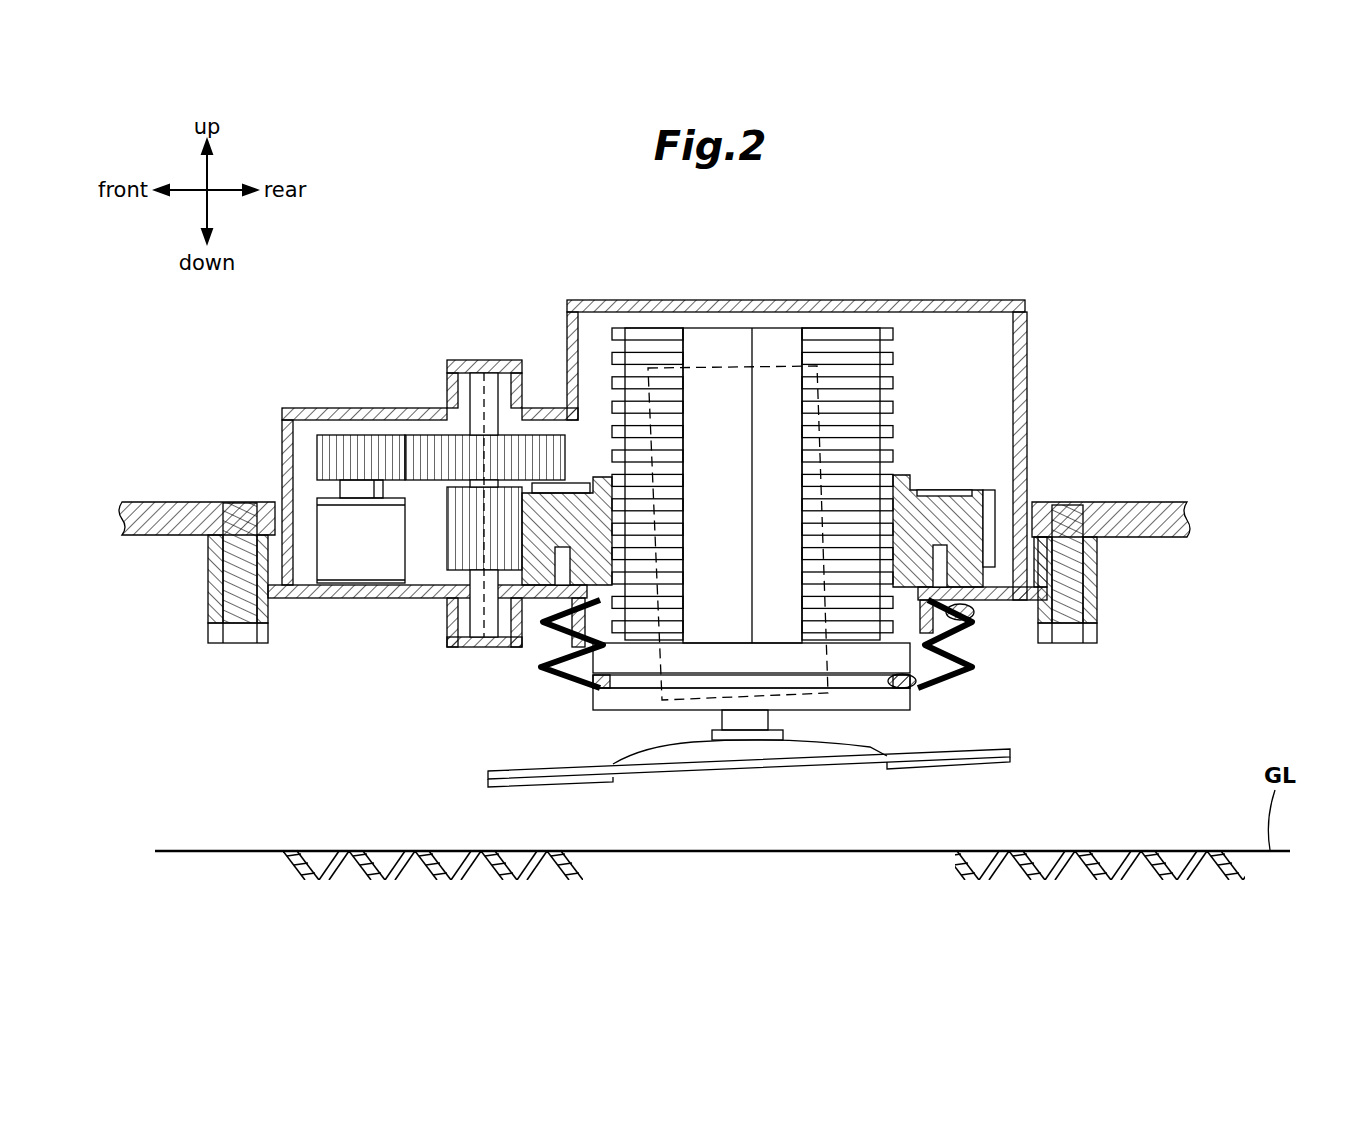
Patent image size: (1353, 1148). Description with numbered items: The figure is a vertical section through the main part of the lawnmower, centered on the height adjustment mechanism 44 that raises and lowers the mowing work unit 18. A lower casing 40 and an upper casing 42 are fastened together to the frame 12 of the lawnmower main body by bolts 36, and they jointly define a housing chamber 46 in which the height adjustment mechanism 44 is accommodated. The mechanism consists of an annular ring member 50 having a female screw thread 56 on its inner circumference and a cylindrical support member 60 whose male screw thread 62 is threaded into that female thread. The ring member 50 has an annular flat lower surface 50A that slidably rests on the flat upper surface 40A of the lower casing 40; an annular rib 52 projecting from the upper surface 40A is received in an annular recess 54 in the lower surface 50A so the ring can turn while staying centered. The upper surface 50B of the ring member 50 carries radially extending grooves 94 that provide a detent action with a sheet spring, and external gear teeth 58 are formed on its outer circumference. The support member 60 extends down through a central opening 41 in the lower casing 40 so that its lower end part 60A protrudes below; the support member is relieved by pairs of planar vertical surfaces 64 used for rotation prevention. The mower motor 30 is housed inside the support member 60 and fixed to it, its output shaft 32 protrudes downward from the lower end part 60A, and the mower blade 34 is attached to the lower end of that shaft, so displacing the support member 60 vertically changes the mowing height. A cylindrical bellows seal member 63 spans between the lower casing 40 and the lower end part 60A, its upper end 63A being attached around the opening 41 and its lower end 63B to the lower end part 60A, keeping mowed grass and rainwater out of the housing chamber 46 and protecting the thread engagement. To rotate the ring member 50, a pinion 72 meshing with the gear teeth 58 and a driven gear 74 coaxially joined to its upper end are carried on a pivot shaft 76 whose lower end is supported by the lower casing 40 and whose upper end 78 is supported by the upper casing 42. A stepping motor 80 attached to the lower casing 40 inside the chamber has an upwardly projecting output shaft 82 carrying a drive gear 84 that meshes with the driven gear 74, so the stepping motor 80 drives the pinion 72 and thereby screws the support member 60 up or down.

The frame 12 is at (1161, 500).
The mowing work unit 18 is at (770, 760).
The mower motor 30 is at (752, 464).
The output shaft 32 is at (740, 733).
The mower blade 34 is at (835, 760).
The bolts 36 is at (225, 605).
The lower casing 40 is at (378, 598).
The upper surface of the lower casing 40A is at (988, 543).
The central opening 41 is at (555, 684).
The upper casing 42 is at (372, 408).
The height adjustment mechanism 44 is at (905, 408).
The housing chamber 46 is at (953, 320).
The annular ring member 50 is at (978, 484).
The lower surface of the ring member 50A is at (1063, 608).
The upper surface of the ring member 50B is at (922, 488).
The annular rib 52 is at (973, 641).
The annular recess 54 is at (938, 547).
The female screw thread 56 is at (613, 521).
The external gear teeth 58 is at (990, 552).
The cylindrical support member 60 is at (708, 334).
The lower end part of the support member 60A is at (625, 705).
The male screw thread 62 is at (857, 360).
The coil spring 63 is at (965, 666).
The upper spring end 63A is at (958, 616).
The lower spring end 63B is at (904, 692).
The vertical surfaces 64 is at (768, 336).
The pinion 72 is at (462, 545).
The driven gear 74 is at (437, 450).
The pivot shaft 76 is at (488, 625).
The gear shaft upper end 78 is at (477, 380).
The stepping motor 80 is at (345, 570).
The output shaft of the stepping motor 82 is at (345, 490).
The drive gear 84 is at (348, 450).
The groove 94 is at (546, 482).